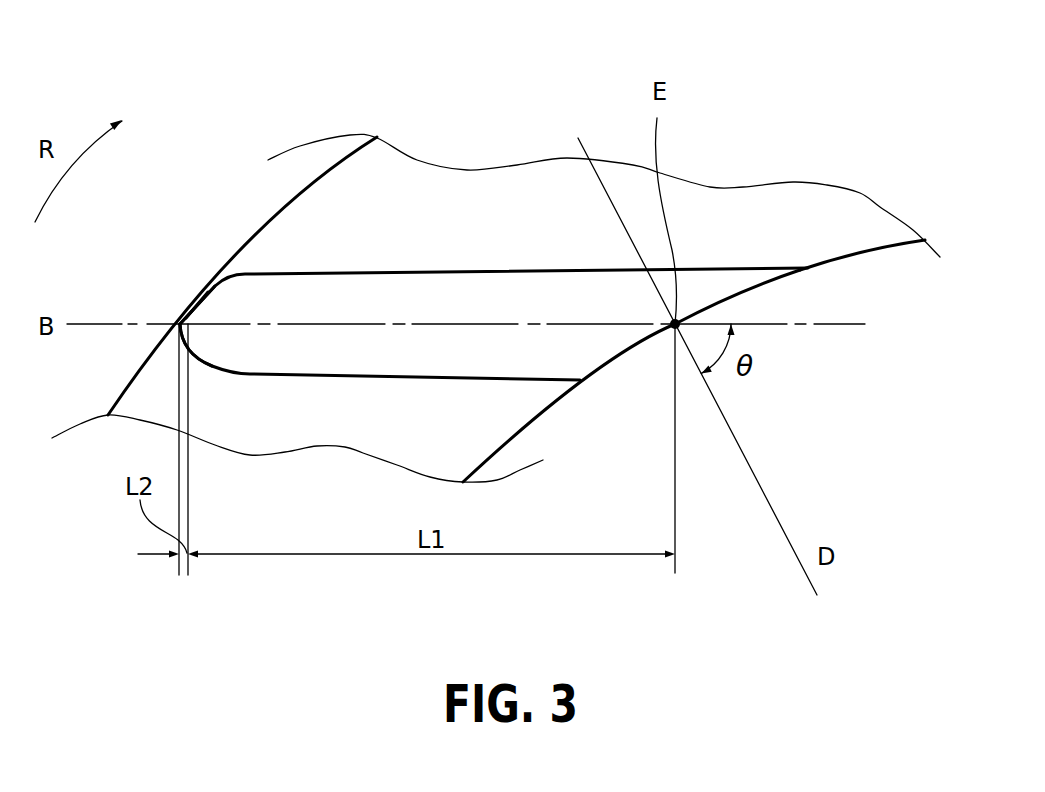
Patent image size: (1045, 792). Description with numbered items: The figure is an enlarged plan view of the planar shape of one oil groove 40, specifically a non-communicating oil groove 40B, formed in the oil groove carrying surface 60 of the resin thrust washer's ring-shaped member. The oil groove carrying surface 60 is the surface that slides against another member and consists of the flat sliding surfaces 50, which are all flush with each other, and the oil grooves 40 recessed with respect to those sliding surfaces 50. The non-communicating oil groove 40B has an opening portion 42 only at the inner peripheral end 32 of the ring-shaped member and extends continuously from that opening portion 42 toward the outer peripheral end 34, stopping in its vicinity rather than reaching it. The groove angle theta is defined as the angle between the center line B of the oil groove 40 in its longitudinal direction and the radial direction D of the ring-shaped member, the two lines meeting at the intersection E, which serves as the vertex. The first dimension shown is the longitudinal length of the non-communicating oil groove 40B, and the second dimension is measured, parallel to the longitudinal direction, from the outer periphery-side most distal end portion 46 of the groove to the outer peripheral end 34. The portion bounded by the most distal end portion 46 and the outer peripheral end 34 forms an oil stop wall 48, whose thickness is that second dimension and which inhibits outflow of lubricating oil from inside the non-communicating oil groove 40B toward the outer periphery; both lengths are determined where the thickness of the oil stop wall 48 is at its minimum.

The inner peripheral end 32 is at (872, 254).
The outer peripheral end 34 is at (306, 193).
The oil groove 40 is at (494, 227).
The non-communicating oil groove 40B is at (383, 300).
The opening portion 42 is at (735, 302).
The outer periphery-side most distal end portion 46 is at (196, 300).
The oil stop wall 48 is at (198, 304).
The sliding surface 50 is at (516, 188).
The oil groove carrying surface 60 is at (557, 73).